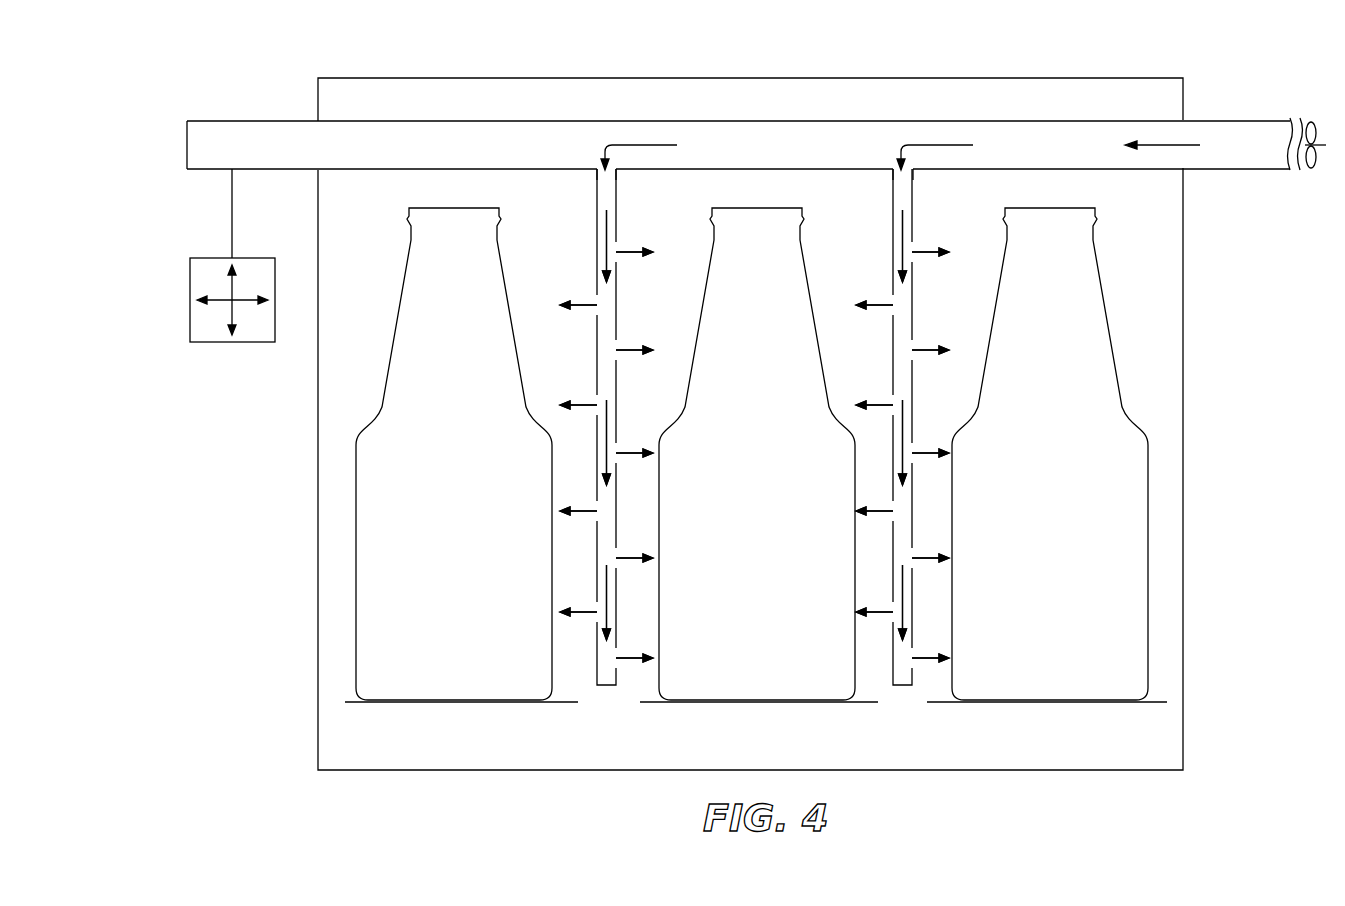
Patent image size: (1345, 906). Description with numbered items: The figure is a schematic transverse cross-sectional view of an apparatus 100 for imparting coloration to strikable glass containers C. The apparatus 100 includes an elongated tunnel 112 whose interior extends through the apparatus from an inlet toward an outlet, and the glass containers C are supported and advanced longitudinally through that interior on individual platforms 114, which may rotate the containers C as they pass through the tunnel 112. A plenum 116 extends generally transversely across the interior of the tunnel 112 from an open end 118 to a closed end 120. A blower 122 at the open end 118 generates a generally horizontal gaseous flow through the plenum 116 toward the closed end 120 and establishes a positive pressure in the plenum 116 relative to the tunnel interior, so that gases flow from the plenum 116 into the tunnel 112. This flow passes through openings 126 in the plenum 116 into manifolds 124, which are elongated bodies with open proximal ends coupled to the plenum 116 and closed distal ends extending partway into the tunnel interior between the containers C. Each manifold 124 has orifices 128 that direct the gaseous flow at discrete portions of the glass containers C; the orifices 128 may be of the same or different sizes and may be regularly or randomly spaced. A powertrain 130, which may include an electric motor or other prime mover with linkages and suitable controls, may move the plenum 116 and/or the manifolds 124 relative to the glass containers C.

The apparatus 100 is at (255, 62).
The tunnel 112 is at (1184, 229).
The platforms 114 is at (346, 704).
The plenum 116 is at (752, 121).
The open end 118 is at (1290, 118).
The closed end 120 is at (187, 172).
The blower 122 is at (1306, 120).
The manifolds 124 is at (598, 687).
The openings 126 is at (600, 173).
The orifices 128 is at (578, 325).
The powertrain 130 is at (194, 344).
The glass containers C is at (456, 207).